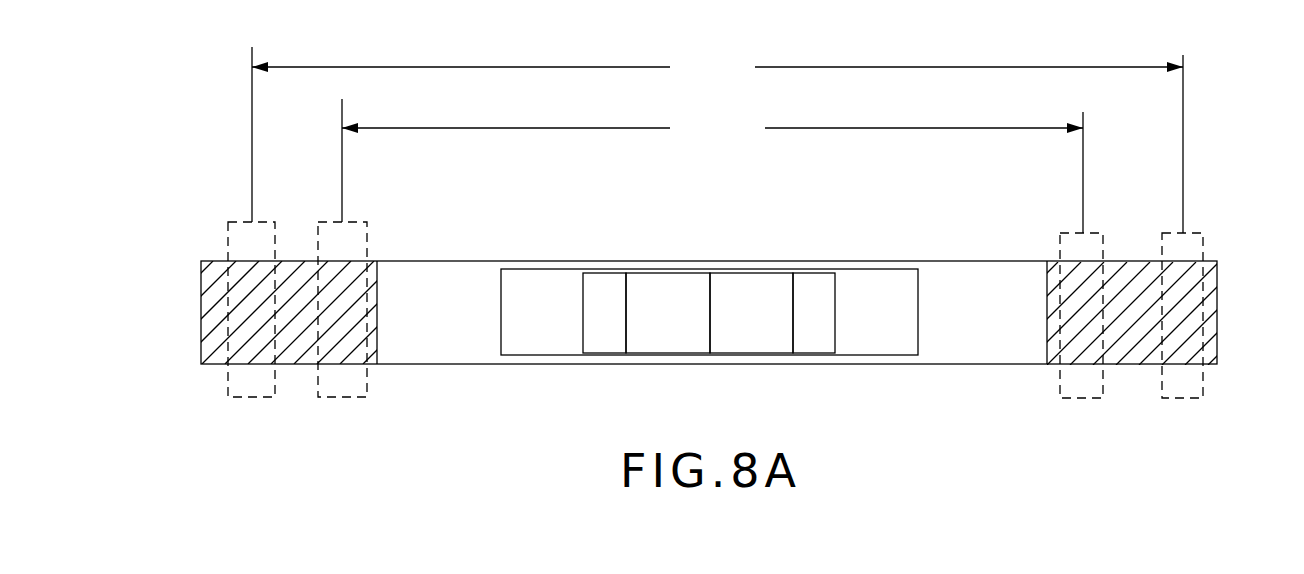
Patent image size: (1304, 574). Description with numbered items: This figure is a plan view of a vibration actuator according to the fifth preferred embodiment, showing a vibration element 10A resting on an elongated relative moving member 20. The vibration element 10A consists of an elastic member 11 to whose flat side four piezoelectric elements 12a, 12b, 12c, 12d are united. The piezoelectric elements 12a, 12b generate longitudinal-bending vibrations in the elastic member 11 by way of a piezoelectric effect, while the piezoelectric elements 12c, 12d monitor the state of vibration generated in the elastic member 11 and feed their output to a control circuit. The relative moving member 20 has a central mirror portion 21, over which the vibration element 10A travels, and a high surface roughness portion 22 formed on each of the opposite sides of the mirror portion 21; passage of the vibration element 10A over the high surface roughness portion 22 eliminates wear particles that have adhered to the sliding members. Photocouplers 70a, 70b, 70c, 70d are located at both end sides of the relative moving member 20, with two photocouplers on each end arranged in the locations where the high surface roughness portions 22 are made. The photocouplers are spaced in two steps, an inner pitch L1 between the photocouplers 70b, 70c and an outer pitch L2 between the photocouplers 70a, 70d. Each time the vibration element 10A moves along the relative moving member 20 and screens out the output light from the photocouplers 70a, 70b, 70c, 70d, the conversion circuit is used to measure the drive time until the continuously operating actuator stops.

The vibration element 10A is at (713, 279).
The elastic member 11 is at (553, 280).
The piezoelectric element 12a is at (685, 278).
The piezoelectric element 12b is at (767, 285).
The piezoelectric element 12c is at (612, 280).
The piezoelectric element 12d is at (823, 283).
The relative moving member 20 is at (707, 318).
The mirror portion 21 is at (1046, 372).
The high surface roughness portion 22 is at (375, 372).
The photocoupler 70a is at (227, 232).
The photocoupler 70b is at (368, 240).
The photocoupler 70c is at (1063, 232).
The photocoupler 70d is at (1207, 240).
The pitch L1 is at (712, 166).
The pitch L2 is at (717, 140).